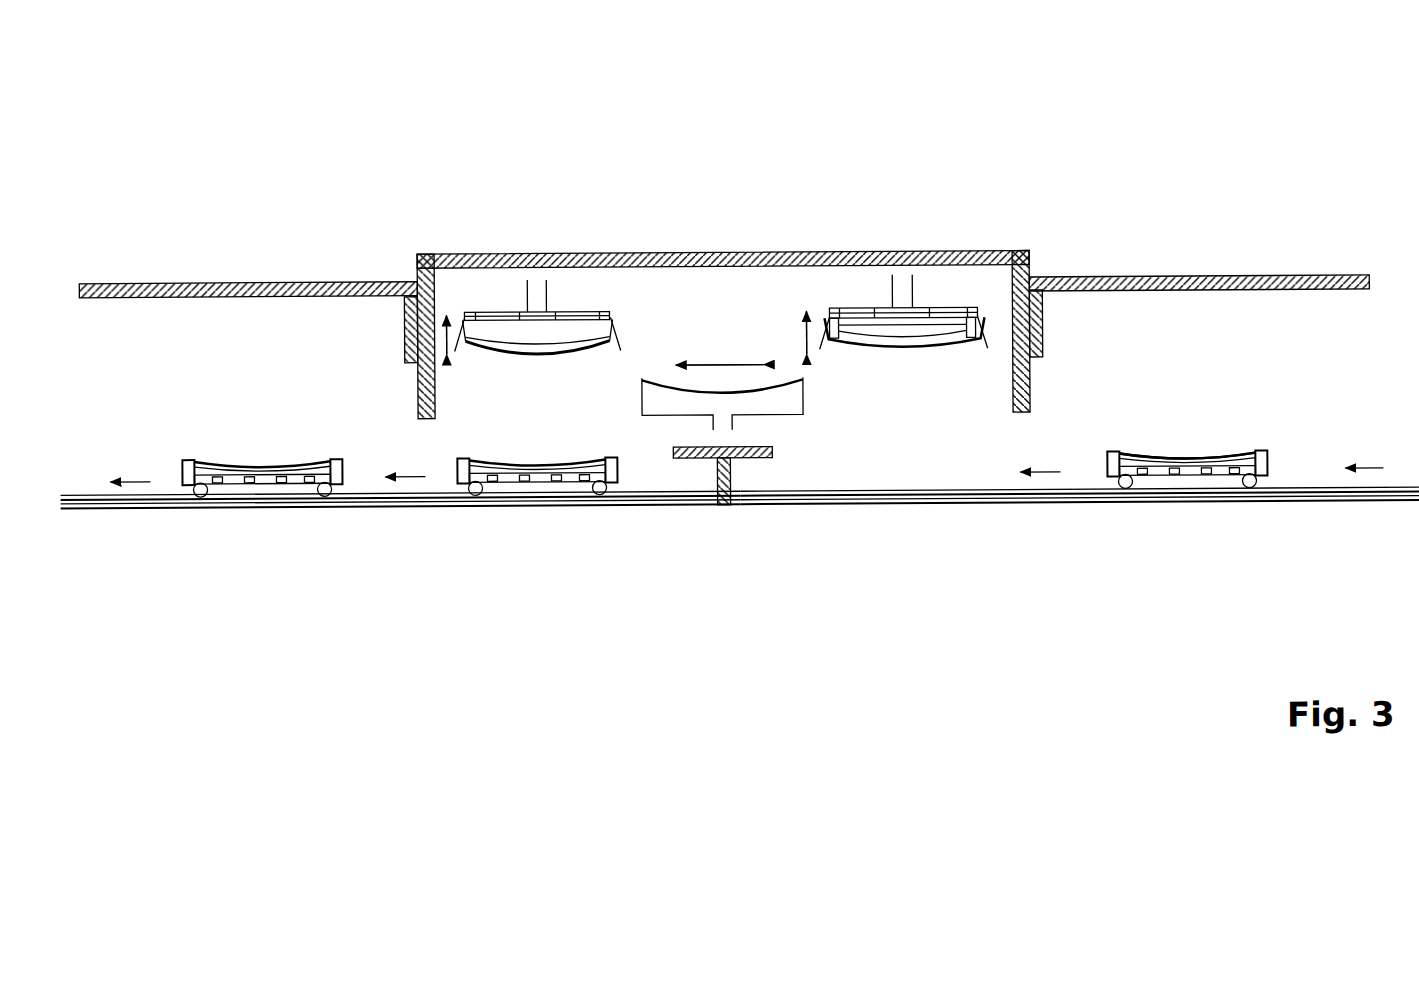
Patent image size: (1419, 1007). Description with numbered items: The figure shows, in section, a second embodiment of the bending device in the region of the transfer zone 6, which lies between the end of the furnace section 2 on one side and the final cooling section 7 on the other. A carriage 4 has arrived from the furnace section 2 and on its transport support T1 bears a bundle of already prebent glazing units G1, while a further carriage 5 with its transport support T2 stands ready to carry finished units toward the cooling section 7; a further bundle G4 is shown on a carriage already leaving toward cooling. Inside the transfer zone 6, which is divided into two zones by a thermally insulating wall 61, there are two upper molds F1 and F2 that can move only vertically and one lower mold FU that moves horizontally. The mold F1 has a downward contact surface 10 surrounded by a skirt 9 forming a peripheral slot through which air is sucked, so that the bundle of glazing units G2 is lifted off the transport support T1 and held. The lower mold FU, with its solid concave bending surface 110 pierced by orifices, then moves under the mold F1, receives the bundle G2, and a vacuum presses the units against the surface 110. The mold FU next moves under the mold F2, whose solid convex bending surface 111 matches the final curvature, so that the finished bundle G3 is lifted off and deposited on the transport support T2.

The furnace section 2 is at (1230, 254).
The carriage 4 is at (1217, 489).
The carriage 5 is at (524, 480).
The transfer zone 6 is at (750, 263).
The final cooling section 7 is at (258, 257).
The skirt 9 is at (1031, 263).
The molding surface 10 is at (790, 386).
The thermally insulating wall 61 is at (712, 506).
The concave bending surface 110 is at (724, 522).
The convex bending surface 111 is at (512, 350).
The upper mold F1 is at (942, 294).
The upper mold F2 is at (541, 388).
The lower mold FU is at (920, 297).
The bundle of prebent glazing units G1 is at (1233, 455).
The bundle of glazing units G2 is at (906, 350).
The bundle of finished bent glazing units G3 is at (546, 490).
The bundle of glazing units G4 is at (248, 466).
The transport support T1 is at (1270, 482).
The transport support T2 is at (441, 500).